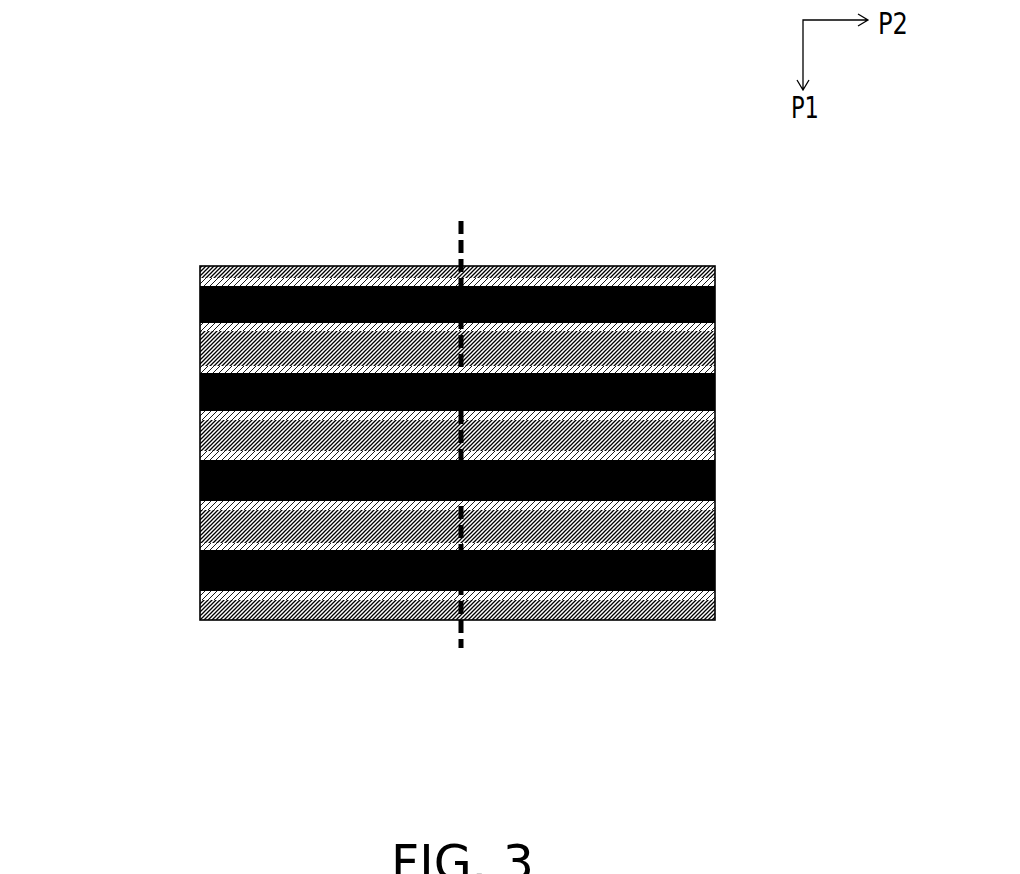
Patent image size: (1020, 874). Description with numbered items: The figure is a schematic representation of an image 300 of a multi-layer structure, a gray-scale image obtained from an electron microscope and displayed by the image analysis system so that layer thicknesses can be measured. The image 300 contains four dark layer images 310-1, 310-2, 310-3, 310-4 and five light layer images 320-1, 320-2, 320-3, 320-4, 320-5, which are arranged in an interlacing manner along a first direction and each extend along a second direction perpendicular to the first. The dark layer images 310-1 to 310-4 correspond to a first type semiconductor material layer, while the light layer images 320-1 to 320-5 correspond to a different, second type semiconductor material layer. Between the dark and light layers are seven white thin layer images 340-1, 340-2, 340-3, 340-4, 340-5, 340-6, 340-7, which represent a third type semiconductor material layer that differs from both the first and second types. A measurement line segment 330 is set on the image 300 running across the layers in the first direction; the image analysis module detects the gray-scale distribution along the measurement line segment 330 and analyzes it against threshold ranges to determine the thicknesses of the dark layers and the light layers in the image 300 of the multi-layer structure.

The image of a multi-layer structure 300 is at (818, 718).
The dark layer image 310-1 is at (707, 302).
The dark layer image 310-2 is at (707, 387).
The dark layer image 310-3 is at (707, 483).
The dark layer image 310-4 is at (707, 567).
The light layer image 320-1 is at (192, 261).
The light layer image 320-2 is at (192, 340).
The light layer image 320-3 is at (192, 430).
The light layer image 320-4 is at (192, 520).
The light layer image 320-5 is at (192, 600).
The measurement line segment 330 is at (474, 302).
The white thin layer image 340-1 is at (192, 278).
The white thin layer image 340-2 is at (192, 319).
The white thin layer image 340-3 is at (192, 359).
The white thin layer image 340-4 is at (192, 408).
The white thin layer image 340-5 is at (192, 451).
The white thin layer image 340-6 is at (192, 542).
The white thin layer image 340-7 is at (192, 583).